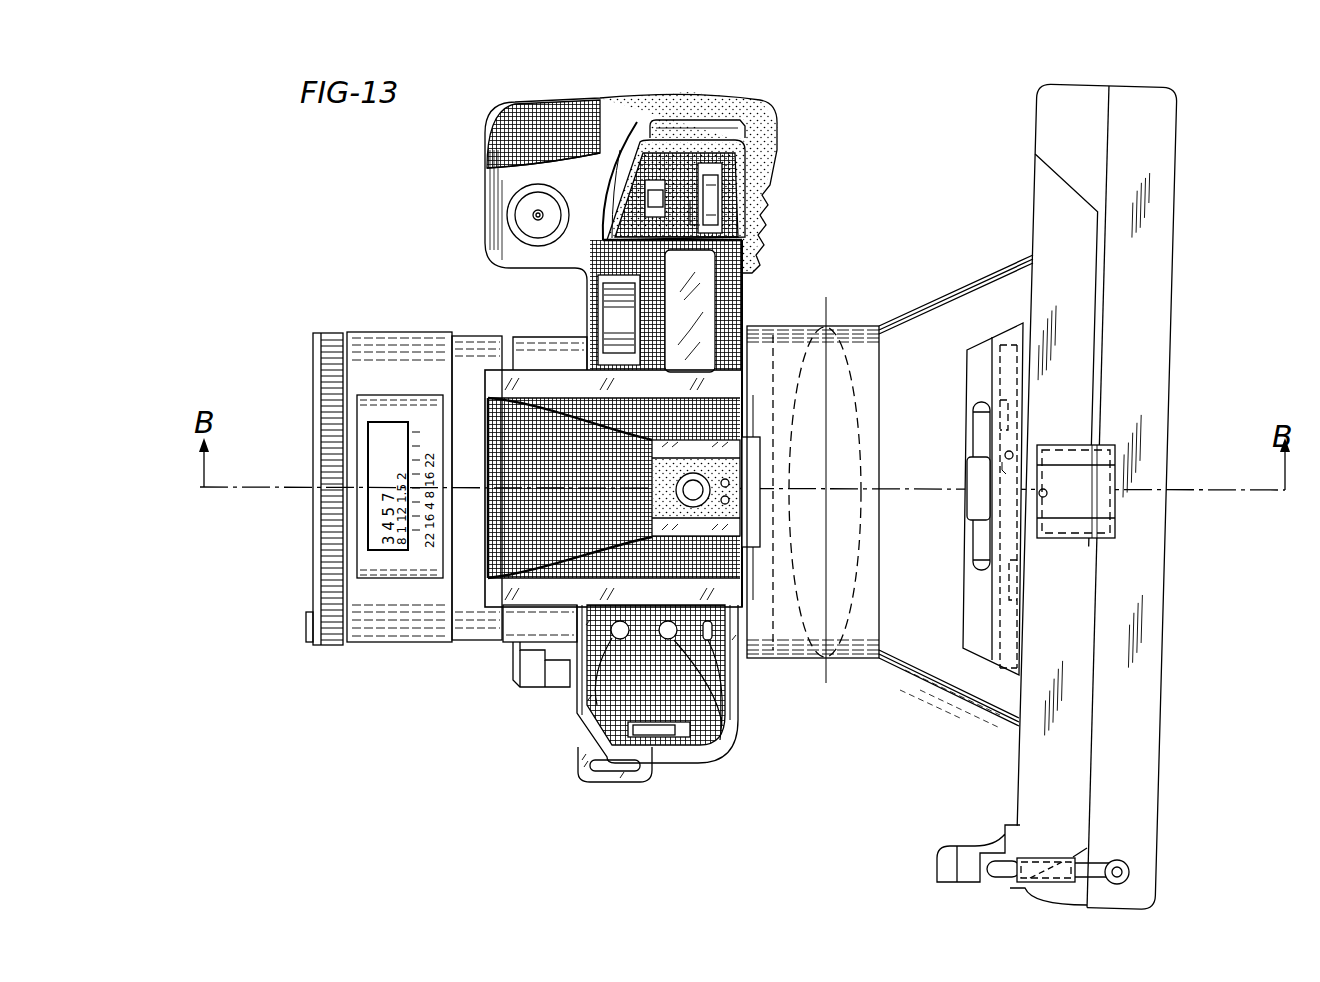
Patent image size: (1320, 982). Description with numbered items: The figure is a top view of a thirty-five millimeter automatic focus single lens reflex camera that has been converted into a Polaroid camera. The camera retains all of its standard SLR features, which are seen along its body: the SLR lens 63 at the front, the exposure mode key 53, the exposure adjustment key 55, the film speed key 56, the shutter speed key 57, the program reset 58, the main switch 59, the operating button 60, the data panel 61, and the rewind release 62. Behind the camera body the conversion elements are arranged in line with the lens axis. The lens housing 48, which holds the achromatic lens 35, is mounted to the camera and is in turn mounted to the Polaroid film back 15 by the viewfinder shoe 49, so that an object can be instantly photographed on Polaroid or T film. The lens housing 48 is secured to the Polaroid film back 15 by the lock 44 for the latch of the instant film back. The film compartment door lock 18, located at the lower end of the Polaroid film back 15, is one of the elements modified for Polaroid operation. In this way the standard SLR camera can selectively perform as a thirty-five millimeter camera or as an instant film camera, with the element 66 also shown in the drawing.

The Polaroid film back 15 is at (1176, 250).
The film compartment door lock 18 is at (1000, 880).
The achromatic lens 35 is at (852, 655).
The lock for the latch 44 is at (963, 500).
The lens housing 48 is at (940, 700).
The viewfinder shoe 49 is at (1115, 478).
The exposure mode key 53 is at (600, 302).
The exposure adjustment key 55 is at (590, 702).
The film speed key 56 is at (668, 642).
The shutter speed key 57 is at (712, 645).
The program reset 58 is at (645, 197).
The main switch 59 is at (712, 205).
The operating button 60 is at (508, 215).
The data panel 61 is at (702, 313).
The rewind release 62 is at (660, 745).
The SLR lens 63 is at (320, 645).
The mounting bracket 66 is at (590, 784).